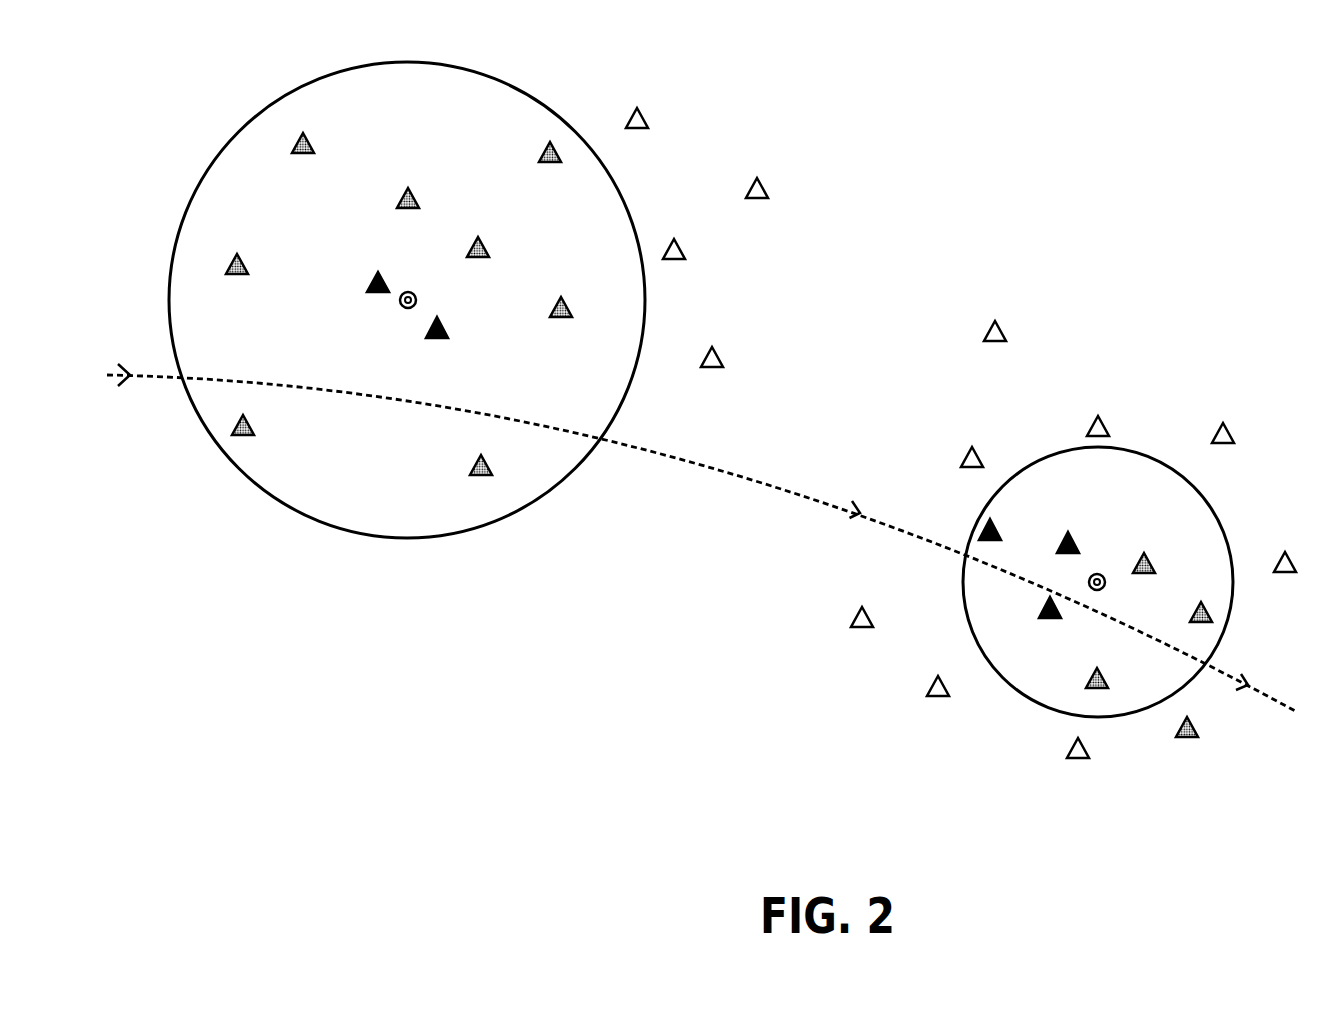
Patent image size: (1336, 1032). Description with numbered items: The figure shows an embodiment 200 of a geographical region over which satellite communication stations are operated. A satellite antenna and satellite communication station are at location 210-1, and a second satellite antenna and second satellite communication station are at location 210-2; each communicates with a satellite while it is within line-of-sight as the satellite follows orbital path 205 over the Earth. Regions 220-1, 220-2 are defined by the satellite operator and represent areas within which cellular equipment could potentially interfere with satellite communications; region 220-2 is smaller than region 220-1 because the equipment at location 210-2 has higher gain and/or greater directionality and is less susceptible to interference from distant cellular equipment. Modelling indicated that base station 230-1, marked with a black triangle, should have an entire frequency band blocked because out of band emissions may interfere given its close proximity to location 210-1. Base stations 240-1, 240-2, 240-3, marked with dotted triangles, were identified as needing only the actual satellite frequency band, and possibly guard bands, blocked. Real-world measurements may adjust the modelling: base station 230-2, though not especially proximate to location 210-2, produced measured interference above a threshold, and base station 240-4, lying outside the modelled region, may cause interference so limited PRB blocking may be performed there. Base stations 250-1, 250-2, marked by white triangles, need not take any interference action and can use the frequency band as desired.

The embodiment geographical region 200 is at (197, 72).
The orbital path 205 is at (763, 482).
The location 210-1 is at (406, 290).
The location 210-2 is at (1099, 574).
The region 220-1 is at (212, 166).
The region 220-2 is at (1046, 458).
The base station 230-1 is at (441, 319).
The base station 230-2 is at (984, 521).
The base station 240-1 is at (415, 191).
The base station 240-2 is at (485, 241).
The base station 240-3 is at (1098, 668).
The base station 240-4 is at (1187, 738).
The base station 250-1 is at (640, 109).
The base station 250-2 is at (1000, 327).